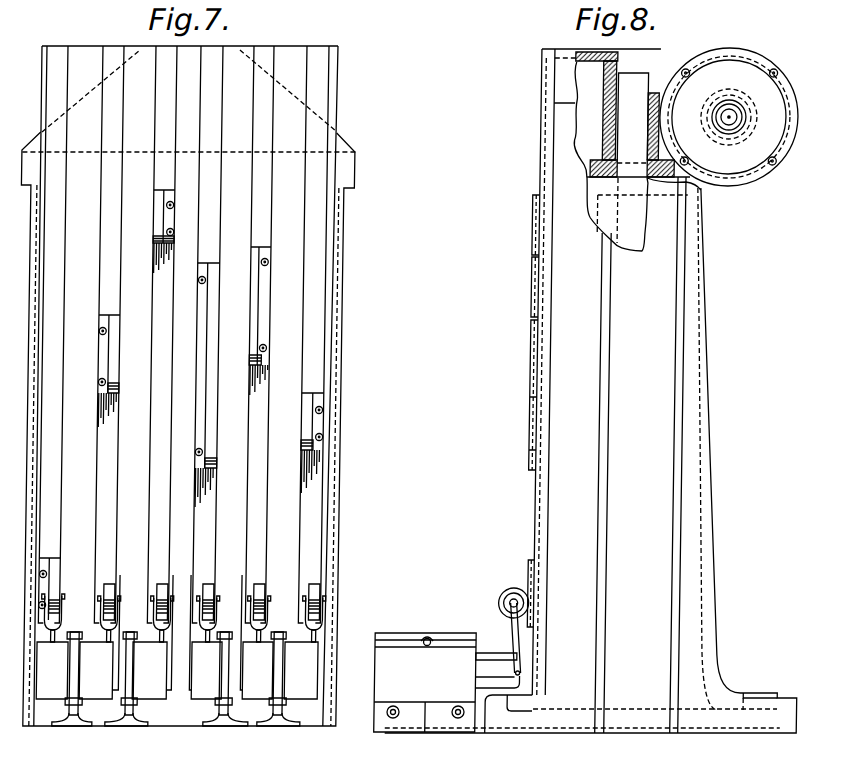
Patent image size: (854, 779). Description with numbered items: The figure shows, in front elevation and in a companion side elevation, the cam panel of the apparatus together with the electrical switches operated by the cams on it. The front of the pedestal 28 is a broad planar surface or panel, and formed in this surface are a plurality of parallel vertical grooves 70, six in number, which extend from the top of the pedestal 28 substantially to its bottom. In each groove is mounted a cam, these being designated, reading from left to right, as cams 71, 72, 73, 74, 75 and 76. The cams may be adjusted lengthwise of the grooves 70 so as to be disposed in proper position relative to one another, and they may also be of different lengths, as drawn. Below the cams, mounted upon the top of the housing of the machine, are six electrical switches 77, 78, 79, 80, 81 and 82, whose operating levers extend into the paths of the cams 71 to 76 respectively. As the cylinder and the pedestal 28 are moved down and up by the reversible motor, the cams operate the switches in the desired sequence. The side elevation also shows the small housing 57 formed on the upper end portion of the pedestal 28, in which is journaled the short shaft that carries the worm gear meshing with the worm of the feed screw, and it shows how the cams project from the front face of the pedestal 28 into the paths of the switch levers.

In FIG. 7, the pedestal 28 is at (359, 168).
In FIG. 8, the pedestal 28 is at (697, 328).
In FIG. 8, the housing 57 is at (760, 183).
In FIG. 7, the grooves 70 is at (49, 60).
In FIG. 7, the cam 71 is at (61, 577).
In FIG. 8, the cam 71 is at (537, 585).
In FIG. 7, the cam 72 is at (119, 350).
In FIG. 7, the cam 73 is at (159, 210).
In FIG. 8, the cam 73 is at (536, 218).
In FIG. 7, the cam 74 is at (217, 340).
In FIG. 7, the cam 75 is at (257, 295).
In FIG. 8, the cam 75 is at (538, 308).
In FIG. 7, the cam 76 is at (313, 423).
In FIG. 8, the cam 76 is at (538, 418).
In FIG. 7, the electrical switch 77 is at (60, 693).
In FIG. 7, the electrical switch 78 is at (108, 693).
In FIG. 7, the electrical switch 79 is at (168, 693).
In FIG. 7, the electrical switch 80 is at (210, 693).
In FIG. 7, the electrical switch 81 is at (268, 693).
In FIG. 7, the electrical switch 82 is at (323, 693).
In FIG. 8, the electrical switch 82 is at (444, 652).